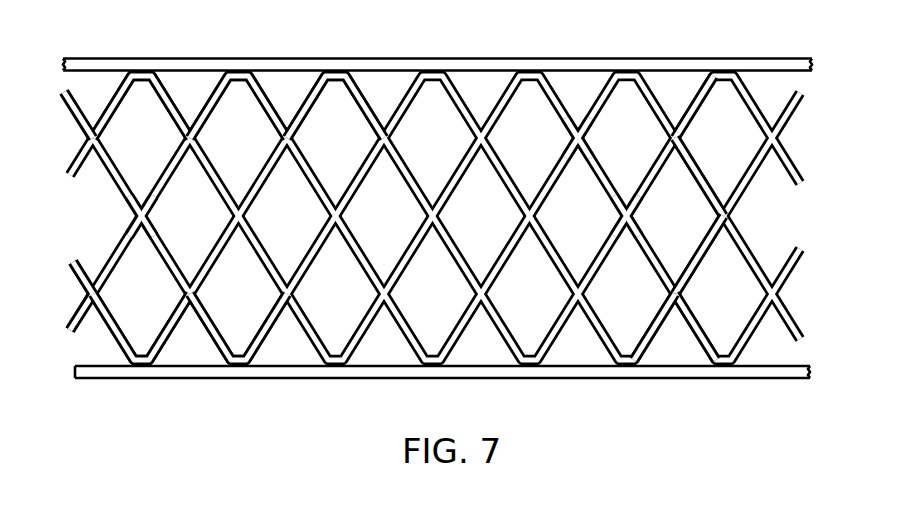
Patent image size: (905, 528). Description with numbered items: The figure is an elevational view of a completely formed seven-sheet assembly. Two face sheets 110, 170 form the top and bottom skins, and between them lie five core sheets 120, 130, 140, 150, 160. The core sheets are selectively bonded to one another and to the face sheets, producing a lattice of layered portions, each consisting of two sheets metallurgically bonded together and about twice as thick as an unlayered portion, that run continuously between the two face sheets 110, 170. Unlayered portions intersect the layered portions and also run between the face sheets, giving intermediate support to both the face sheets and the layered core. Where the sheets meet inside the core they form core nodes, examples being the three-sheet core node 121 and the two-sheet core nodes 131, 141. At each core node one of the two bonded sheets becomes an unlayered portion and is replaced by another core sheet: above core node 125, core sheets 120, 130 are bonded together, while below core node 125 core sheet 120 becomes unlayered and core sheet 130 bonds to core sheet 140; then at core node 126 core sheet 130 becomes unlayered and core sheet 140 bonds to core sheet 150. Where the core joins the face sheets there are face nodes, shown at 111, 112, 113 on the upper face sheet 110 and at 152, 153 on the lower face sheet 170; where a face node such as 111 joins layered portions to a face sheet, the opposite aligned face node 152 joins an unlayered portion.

The face sheet 110 is at (777, 60).
The face node 111 is at (140, 76).
The face node 112 is at (237, 72).
The face node 113 is at (335, 72).
The core sheet 120 is at (700, 99).
The core node 121 is at (73, 137).
The core node 125 is at (580, 120).
The core node 126 is at (630, 201).
The core sheet 130 is at (697, 175).
The core node 131 is at (133, 219).
The core sheet 140 is at (698, 248).
The core node 141 is at (85, 298).
The core sheet 150 is at (695, 318).
The face node 152 is at (140, 364).
The face node 153 is at (238, 365).
The core sheet 160 is at (650, 347).
The face sheet 170 is at (617, 377).